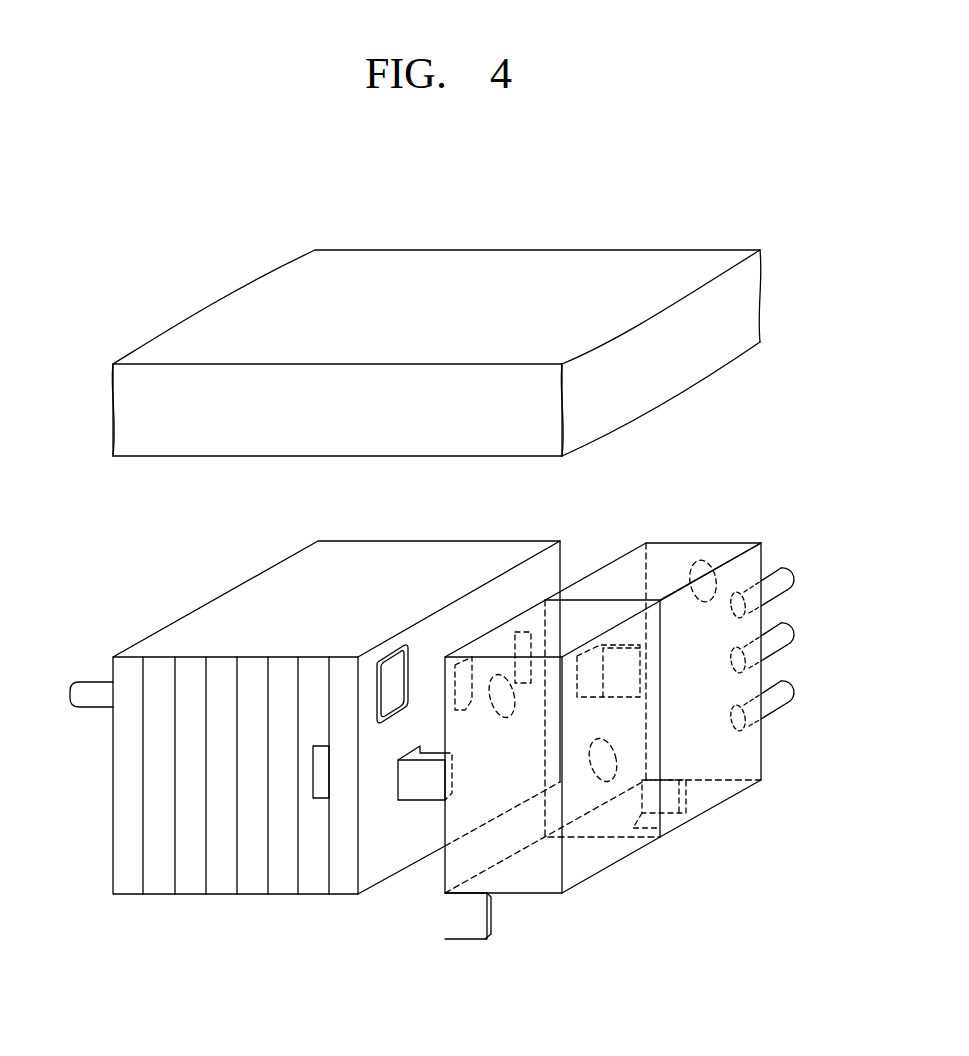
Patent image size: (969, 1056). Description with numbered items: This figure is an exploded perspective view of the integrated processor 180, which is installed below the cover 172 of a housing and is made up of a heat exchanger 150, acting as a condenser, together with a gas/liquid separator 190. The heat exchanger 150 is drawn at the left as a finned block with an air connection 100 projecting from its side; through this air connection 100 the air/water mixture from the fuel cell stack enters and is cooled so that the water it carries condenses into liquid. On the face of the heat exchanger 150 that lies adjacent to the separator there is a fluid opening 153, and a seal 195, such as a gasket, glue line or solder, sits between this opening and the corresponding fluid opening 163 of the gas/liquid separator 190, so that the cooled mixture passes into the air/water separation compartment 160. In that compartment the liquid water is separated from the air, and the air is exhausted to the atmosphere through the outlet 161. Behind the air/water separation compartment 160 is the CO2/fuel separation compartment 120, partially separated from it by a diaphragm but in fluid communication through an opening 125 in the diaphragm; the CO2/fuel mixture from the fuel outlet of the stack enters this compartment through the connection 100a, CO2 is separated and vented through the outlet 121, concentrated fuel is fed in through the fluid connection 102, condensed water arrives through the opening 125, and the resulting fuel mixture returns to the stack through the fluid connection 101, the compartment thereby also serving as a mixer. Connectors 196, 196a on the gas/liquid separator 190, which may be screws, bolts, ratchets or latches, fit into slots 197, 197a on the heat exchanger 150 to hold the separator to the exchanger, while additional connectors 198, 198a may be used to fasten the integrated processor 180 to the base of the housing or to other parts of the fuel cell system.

The cover 172 is at (472, 273).
The integrated processor 180 is at (610, 518).
The heat exchanger 150 is at (230, 608).
The air connection 100 is at (95, 693).
The fluid opening 153 is at (382, 670).
The seal 195 is at (392, 672).
The slot 197 is at (323, 792).
The connector 196 is at (420, 788).
The air/water separation compartment 160 is at (577, 865).
The fluid opening 163 is at (468, 673).
The slot 197a is at (525, 637).
The outlet 161 is at (505, 718).
The additional connector 198 is at (467, 930).
The CO2/fuel separation compartment 120 is at (715, 795).
The connector 196a is at (618, 657).
The opening 125 is at (605, 760).
The outlet 121 is at (704, 566).
The additional connector 198a is at (672, 807).
The connection 100a is at (778, 578).
The fluid connection 102 is at (778, 638).
The fluid connection 101 is at (778, 697).
The gas/liquid separator 190 is at (668, 866).